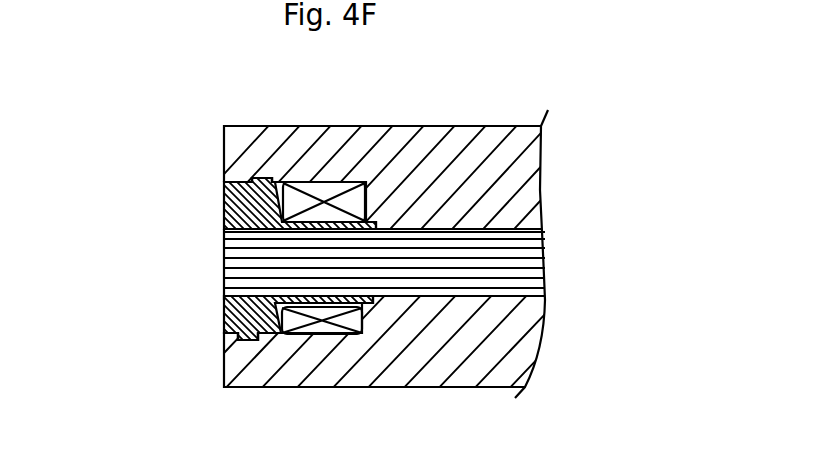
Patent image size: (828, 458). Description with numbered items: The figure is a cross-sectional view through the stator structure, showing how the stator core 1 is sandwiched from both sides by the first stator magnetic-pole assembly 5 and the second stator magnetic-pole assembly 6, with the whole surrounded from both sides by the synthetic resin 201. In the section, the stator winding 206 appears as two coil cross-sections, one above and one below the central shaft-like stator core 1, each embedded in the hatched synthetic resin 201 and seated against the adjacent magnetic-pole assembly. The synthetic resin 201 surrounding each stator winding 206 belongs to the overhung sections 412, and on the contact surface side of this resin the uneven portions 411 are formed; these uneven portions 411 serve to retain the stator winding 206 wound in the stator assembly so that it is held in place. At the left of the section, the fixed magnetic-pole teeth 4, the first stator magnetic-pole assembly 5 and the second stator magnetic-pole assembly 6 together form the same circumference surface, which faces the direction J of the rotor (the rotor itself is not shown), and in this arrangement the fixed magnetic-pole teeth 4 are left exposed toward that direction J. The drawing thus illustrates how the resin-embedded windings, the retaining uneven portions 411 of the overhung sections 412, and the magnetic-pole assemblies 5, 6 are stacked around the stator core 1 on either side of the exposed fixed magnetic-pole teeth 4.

The stator core 1 is at (512, 228).
The fixed magnetic-pole teeth 4 is at (210, 261).
The first stator magnetic-pole assembly 5 is at (211, 203).
The second stator magnetic-pole assembly 6 is at (209, 340).
The synthetic resin 201 is at (455, 153).
The stator winding 206 is at (336, 205).
The uneven portions 411 is at (253, 178).
The overhung sections 412 is at (230, 182).
The direction of the rotor J is at (108, 251).